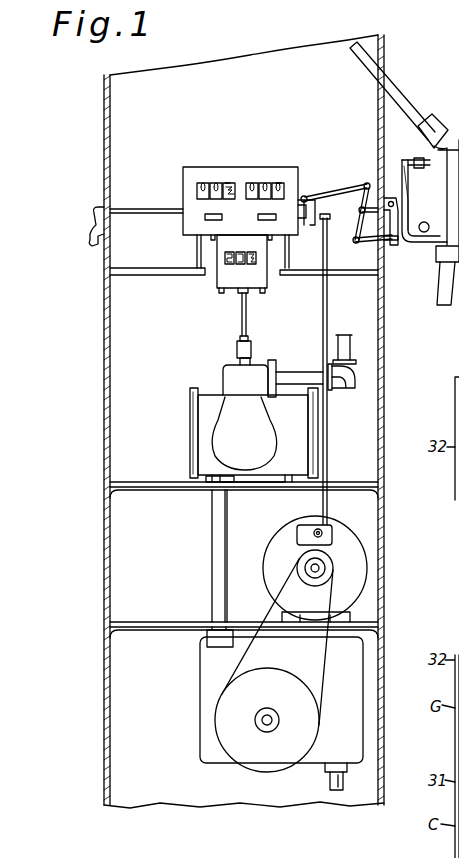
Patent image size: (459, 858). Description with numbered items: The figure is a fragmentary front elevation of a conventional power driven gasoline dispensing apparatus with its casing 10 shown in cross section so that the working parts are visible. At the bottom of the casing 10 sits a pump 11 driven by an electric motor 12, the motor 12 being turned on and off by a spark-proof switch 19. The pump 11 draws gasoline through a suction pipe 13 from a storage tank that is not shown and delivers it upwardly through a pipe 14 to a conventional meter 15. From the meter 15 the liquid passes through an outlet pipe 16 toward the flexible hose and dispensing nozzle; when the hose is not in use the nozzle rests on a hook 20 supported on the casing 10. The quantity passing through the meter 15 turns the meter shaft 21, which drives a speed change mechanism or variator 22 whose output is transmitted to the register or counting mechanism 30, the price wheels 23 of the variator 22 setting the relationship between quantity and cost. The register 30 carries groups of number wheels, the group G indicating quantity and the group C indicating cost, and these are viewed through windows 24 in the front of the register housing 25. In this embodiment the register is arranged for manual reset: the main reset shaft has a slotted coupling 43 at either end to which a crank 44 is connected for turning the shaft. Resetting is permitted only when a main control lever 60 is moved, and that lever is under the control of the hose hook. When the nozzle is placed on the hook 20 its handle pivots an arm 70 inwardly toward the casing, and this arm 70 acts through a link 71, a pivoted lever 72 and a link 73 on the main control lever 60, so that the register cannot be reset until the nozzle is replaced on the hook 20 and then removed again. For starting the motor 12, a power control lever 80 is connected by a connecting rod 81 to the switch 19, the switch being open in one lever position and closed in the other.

The casing 10 is at (104, 400).
The pump 11 is at (200, 728).
The electric motor 12 is at (278, 547).
The suction pipe 13 is at (336, 790).
The pipe 14 is at (212, 542).
The meter 15 is at (198, 428).
The outlet pipe 16 is at (296, 372).
The spark-proof switch 19 is at (303, 526).
The hook 20 is at (432, 283).
The meter shaft 21 is at (242, 333).
The variator 22 is at (217, 282).
The price wheels 23 is at (228, 264).
The windows 24 is at (230, 182).
The register housing 25 is at (262, 172).
The register 30 is at (193, 170).
The slotted coupling 43 is at (180, 210).
The crank 44 is at (96, 221).
The main control lever 60 is at (305, 196).
The arm 70 is at (410, 255).
The link 71 is at (358, 242).
The pivoted lever 72 is at (357, 215).
The link 73 is at (338, 190).
The power control lever 80 is at (303, 232).
The connecting rod 81 is at (320, 297).
The group of number wheels G is at (196, 188).
The group of number wheels C is at (280, 182).